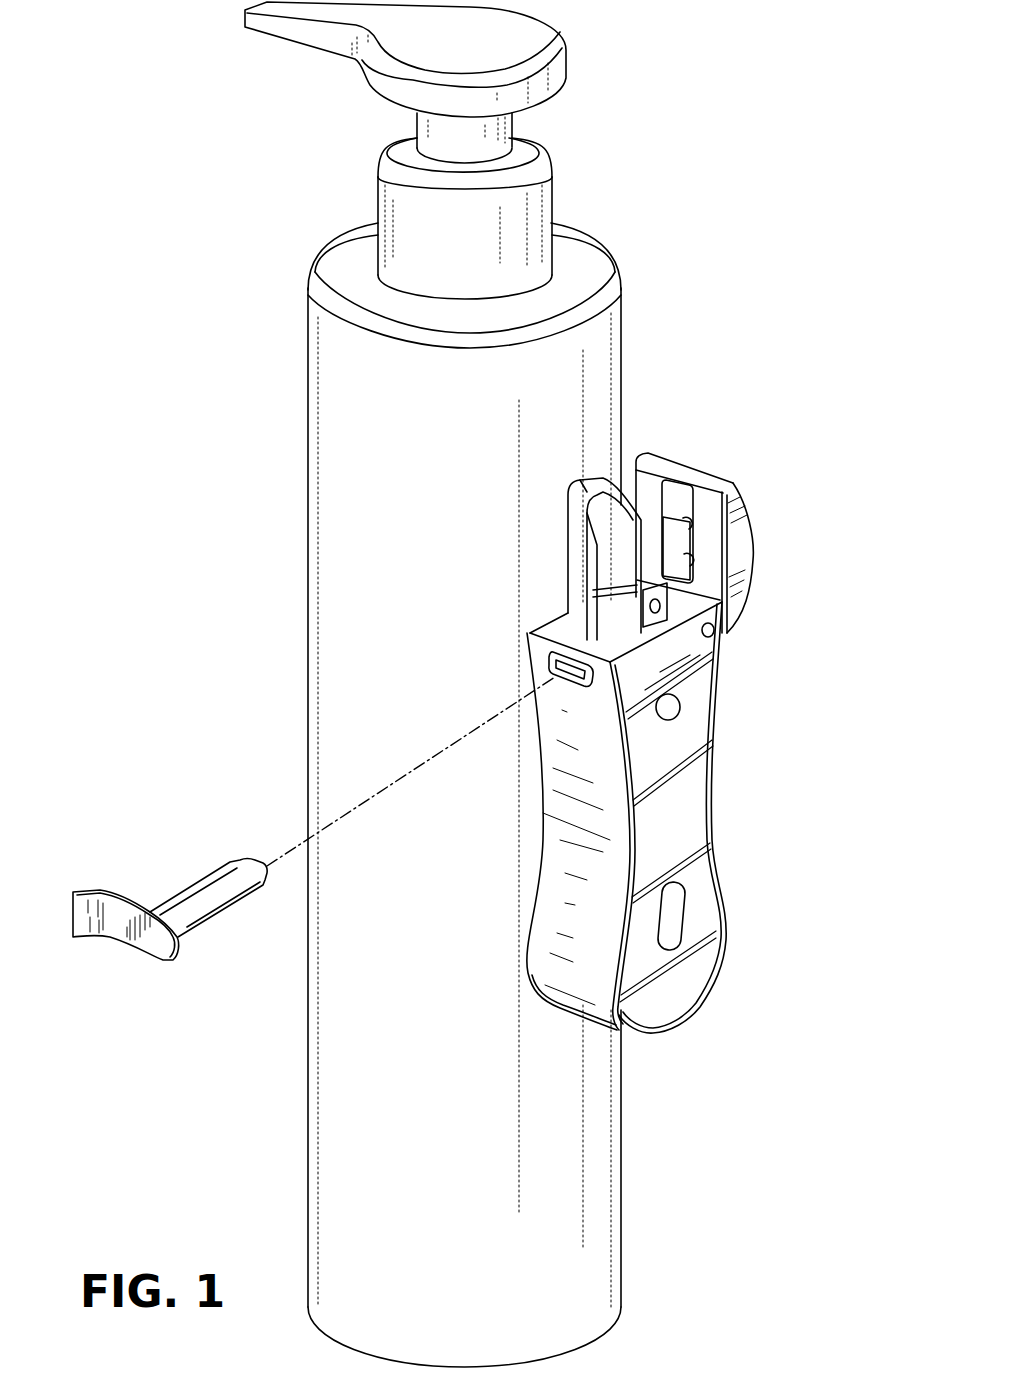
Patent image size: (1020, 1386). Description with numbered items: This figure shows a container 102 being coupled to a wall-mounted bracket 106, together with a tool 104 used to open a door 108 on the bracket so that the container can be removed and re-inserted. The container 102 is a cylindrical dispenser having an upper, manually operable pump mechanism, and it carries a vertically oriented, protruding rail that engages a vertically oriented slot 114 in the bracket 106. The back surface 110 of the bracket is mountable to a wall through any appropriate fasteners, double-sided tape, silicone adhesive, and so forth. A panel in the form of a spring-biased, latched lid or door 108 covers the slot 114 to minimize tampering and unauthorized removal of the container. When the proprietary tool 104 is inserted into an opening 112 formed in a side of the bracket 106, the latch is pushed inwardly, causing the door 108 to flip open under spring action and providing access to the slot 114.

The container 102 is at (452, 536).
The clip arm 104 is at (613, 563).
The wall-mounted bracket 106 is at (715, 787).
The door 108 is at (723, 478).
The back surface 110 is at (670, 827).
The opening 112 is at (562, 682).
The slot 114 is at (548, 612).